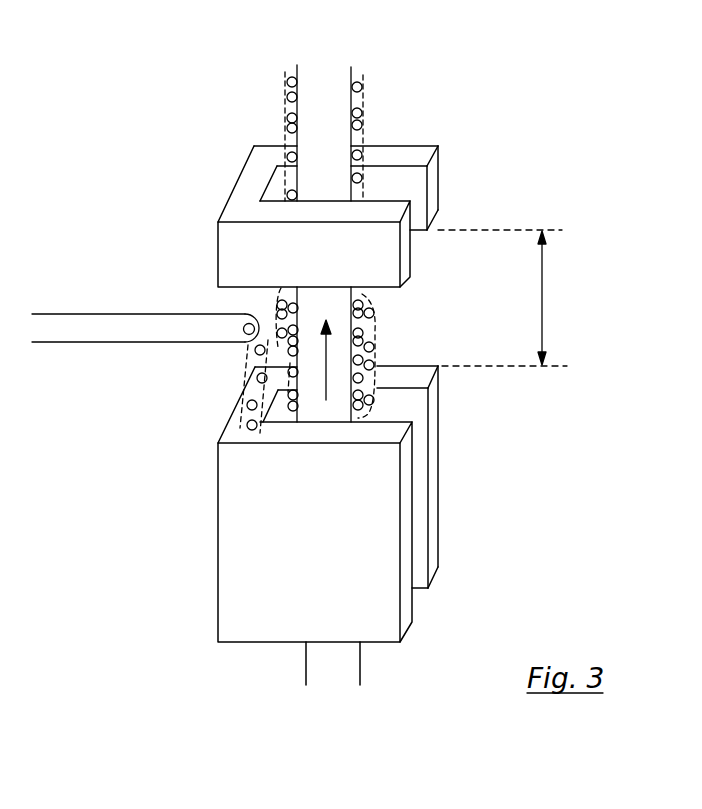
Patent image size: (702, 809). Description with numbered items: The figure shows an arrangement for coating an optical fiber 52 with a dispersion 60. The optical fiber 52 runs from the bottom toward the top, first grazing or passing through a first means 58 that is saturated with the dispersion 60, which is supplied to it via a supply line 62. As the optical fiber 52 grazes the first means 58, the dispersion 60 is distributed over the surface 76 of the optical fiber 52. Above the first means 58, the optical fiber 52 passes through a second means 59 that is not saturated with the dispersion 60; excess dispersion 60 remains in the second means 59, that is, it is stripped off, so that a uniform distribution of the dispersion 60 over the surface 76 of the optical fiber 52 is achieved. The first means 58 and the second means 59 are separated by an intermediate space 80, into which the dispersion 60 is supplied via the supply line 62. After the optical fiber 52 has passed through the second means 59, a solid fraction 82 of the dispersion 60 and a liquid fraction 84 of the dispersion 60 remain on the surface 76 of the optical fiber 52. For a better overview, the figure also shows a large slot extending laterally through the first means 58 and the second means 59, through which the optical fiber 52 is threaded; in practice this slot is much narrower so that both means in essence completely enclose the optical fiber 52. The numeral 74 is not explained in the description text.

The optical fiber 52 is at (333, 125).
The first means 58 is at (233, 528).
The second means 59 is at (228, 242).
The dispersion 60 is at (287, 91).
The supply line 62 is at (112, 322).
The inner coil windings 74 is at (372, 360).
The surface 76 is at (352, 68).
The intermediate space 80 is at (542, 272).
The solid fraction 82 is at (377, 313).
The liquid fraction 84 is at (364, 297).